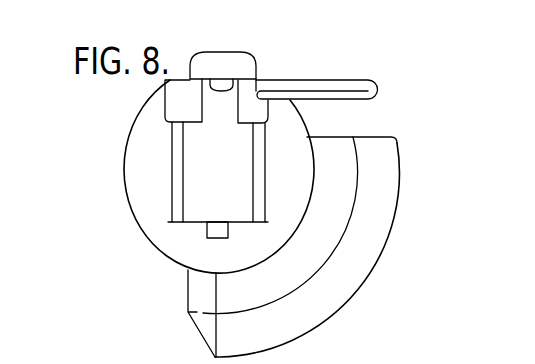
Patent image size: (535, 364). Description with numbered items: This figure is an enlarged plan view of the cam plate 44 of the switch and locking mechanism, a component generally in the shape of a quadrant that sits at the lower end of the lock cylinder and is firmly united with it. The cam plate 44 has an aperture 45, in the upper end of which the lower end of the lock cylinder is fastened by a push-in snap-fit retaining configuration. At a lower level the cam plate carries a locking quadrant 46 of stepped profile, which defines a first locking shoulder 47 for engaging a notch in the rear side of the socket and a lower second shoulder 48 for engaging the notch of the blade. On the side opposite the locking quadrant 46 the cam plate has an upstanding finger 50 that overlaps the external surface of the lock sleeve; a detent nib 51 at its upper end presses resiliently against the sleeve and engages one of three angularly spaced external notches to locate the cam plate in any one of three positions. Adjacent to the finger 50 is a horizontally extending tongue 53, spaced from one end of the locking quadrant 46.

The cam plate 44 is at (140, 254).
The aperture 45 is at (197, 197).
The locking quadrant 46 is at (291, 327).
The first locking shoulder 47 is at (342, 155).
The second shoulder 48 is at (360, 248).
The upstanding finger 50 is at (242, 63).
The detent nib 51 is at (216, 84).
The tongue 53 is at (343, 88).